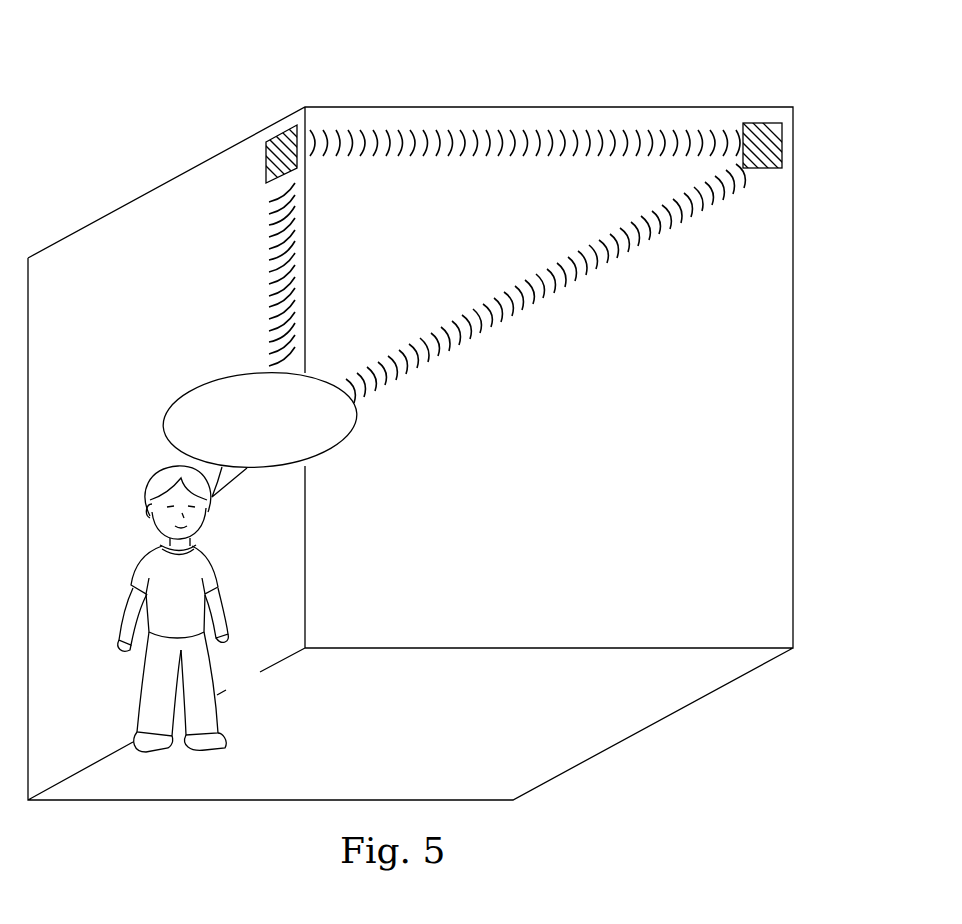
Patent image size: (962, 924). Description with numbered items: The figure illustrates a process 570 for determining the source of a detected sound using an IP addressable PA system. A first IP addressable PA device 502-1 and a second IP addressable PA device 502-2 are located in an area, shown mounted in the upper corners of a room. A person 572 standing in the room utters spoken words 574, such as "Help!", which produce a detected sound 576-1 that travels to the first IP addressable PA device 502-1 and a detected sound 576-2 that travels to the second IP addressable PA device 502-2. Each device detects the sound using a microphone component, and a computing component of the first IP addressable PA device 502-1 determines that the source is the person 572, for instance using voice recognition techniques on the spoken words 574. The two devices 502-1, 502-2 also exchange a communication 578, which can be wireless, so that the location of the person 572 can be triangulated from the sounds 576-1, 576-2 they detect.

The process 570 is at (127, 88).
The first IP addressable PA device 502-1 is at (281, 133).
The second IP addressable PA device 502-2 is at (763, 123).
The communication 578 is at (541, 130).
The detected sound 576-1 is at (268, 269).
The detected sound 576-2 is at (550, 292).
The spoken words 574 is at (189, 396).
The person 572 is at (132, 573).